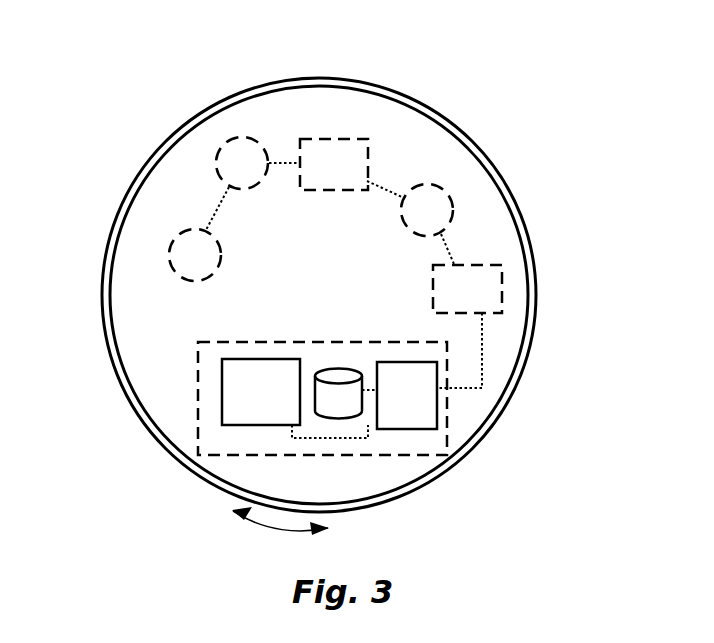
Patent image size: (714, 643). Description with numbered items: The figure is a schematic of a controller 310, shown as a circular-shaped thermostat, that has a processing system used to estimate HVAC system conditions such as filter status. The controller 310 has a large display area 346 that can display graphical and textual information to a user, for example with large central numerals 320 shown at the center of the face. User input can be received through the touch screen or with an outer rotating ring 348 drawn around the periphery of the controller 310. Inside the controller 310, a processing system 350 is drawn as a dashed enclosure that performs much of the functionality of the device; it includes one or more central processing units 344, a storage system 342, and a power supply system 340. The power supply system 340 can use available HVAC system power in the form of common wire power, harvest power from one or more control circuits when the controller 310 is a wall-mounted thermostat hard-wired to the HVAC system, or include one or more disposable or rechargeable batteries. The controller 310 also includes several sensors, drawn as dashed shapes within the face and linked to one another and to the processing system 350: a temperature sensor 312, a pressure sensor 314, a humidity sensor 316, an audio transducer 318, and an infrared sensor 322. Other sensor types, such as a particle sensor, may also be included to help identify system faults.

The controller 310 is at (178, 97).
The temperature sensor 312 is at (467, 326).
The pressure sensor 314 is at (427, 224).
The humidity sensor 316 is at (351, 168).
The audio transducer 318 is at (253, 183).
The large central numerals 320 is at (322, 248).
The infrared sensor 322 is at (195, 255).
The power supply system 340 is at (295, 398).
The storage system 342 is at (346, 394).
The central processing unit 344 is at (407, 395).
The display area 346 is at (410, 137).
The outer rotating ring 348 is at (210, 478).
The processing system 350 is at (228, 343).